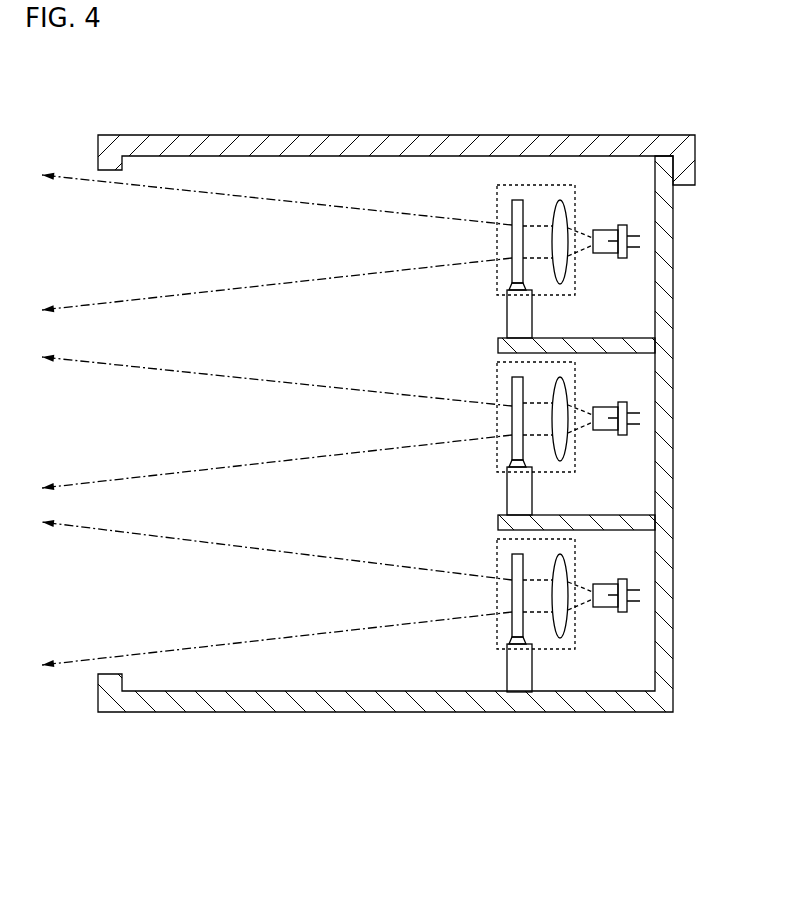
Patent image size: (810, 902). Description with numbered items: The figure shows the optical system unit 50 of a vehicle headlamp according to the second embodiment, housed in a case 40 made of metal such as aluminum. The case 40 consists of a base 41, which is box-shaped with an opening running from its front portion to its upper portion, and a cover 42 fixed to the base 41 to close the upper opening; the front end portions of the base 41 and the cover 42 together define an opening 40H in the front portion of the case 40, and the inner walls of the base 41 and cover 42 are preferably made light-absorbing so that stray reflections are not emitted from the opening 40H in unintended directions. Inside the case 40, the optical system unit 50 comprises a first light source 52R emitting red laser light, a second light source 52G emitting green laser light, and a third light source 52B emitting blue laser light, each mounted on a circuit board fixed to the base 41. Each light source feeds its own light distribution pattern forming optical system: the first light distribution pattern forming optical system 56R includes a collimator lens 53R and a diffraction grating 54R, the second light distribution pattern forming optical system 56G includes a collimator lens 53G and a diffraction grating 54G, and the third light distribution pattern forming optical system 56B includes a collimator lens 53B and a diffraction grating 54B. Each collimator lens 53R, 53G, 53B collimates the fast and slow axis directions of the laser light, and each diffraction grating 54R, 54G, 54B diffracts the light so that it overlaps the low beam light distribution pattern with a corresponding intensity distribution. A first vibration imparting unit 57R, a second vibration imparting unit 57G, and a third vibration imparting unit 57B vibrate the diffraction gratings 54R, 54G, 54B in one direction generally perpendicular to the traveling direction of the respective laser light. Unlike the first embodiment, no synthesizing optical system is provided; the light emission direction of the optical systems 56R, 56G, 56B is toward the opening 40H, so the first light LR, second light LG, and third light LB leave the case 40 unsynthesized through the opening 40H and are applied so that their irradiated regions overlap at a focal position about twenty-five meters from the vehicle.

The case 40 is at (405, 384).
The opening 40H is at (88, 170).
The base 41 is at (667, 205).
The cover 42 is at (677, 150).
The optical system unit 50 is at (568, 427).
The first light source 52R is at (610, 238).
The second light source 52G is at (667, 416).
The third light source 52B is at (660, 636).
The collimator lens 53R is at (560, 200).
The collimator lens 53G is at (646, 408).
The collimator lens 53B is at (559, 668).
The diffraction grating 54R is at (517, 200).
The diffraction grating 54G is at (625, 431).
The diffraction grating 54B is at (466, 668).
The first light distribution pattern forming optical system 56R is at (566, 185).
The second light distribution pattern forming optical system 56G is at (619, 394).
The third light distribution pattern forming optical system 56B is at (567, 661).
The first vibration imparting unit 57R is at (522, 322).
The second vibration imparting unit 57G is at (624, 495).
The third vibration imparting unit 57B is at (507, 713).
The first light LR is at (258, 195).
The second light LG is at (355, 390).
The third light LB is at (308, 635).